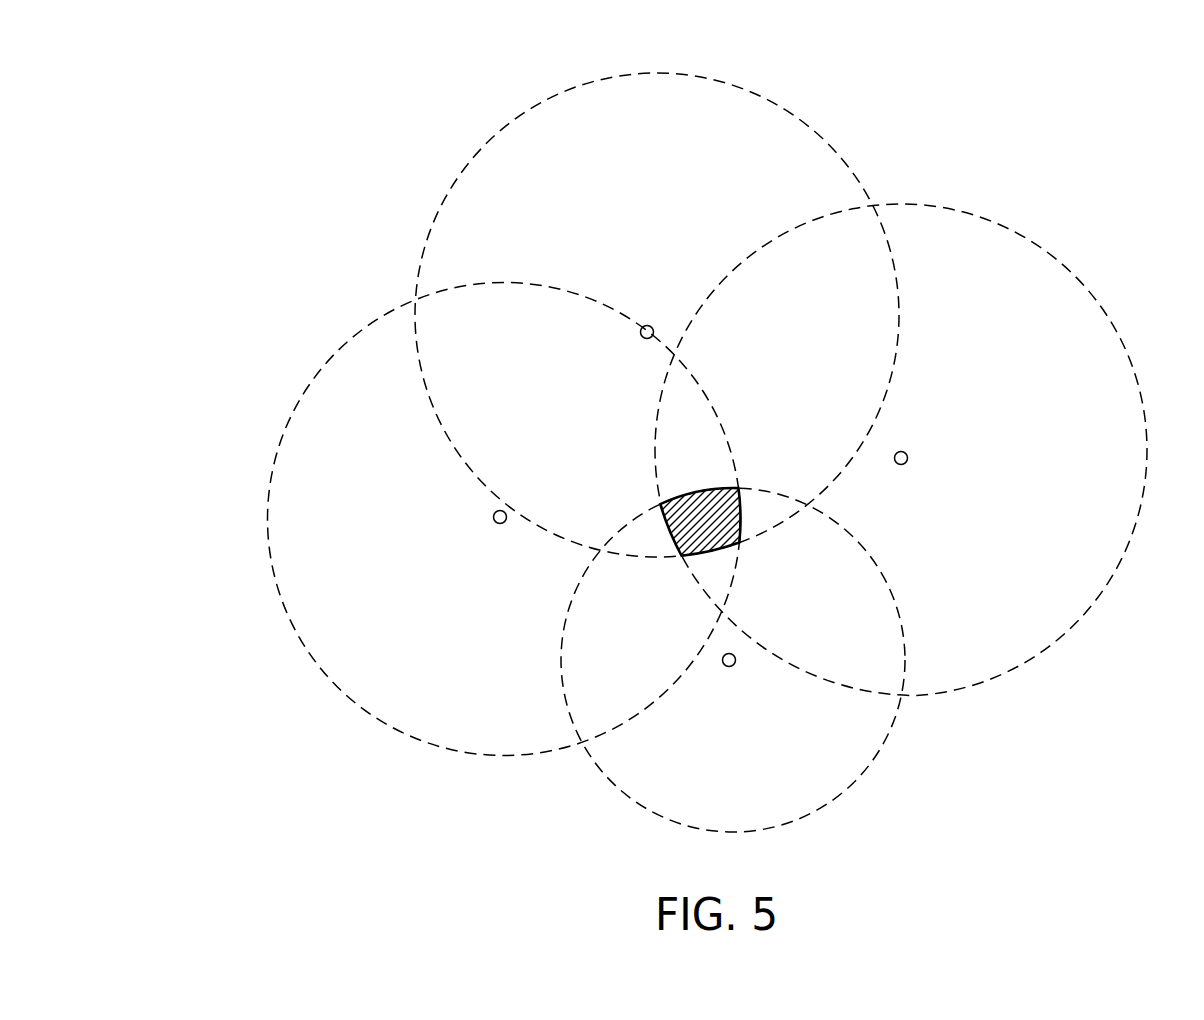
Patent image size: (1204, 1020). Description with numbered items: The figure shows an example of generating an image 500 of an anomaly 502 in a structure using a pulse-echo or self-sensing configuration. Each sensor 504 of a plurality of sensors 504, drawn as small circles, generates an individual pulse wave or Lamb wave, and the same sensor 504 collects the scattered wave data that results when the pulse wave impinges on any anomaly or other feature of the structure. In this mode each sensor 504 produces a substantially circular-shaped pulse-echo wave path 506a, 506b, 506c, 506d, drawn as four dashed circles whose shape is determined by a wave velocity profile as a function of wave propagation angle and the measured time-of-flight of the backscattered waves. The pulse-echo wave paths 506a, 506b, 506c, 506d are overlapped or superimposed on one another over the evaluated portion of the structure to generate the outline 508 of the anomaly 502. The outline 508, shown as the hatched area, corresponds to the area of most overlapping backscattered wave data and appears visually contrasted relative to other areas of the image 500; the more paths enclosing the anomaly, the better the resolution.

The image 500 is at (993, 136).
The anomaly 502 is at (679, 572).
The sensor 504 is at (647, 325).
The pulse-echo wave path 506a is at (268, 568).
The pulse-echo wave path 506b is at (696, 76).
The pulse-echo wave path 506c is at (1084, 290).
The pulse-echo wave path 506d is at (879, 750).
The outline 508 is at (744, 500).